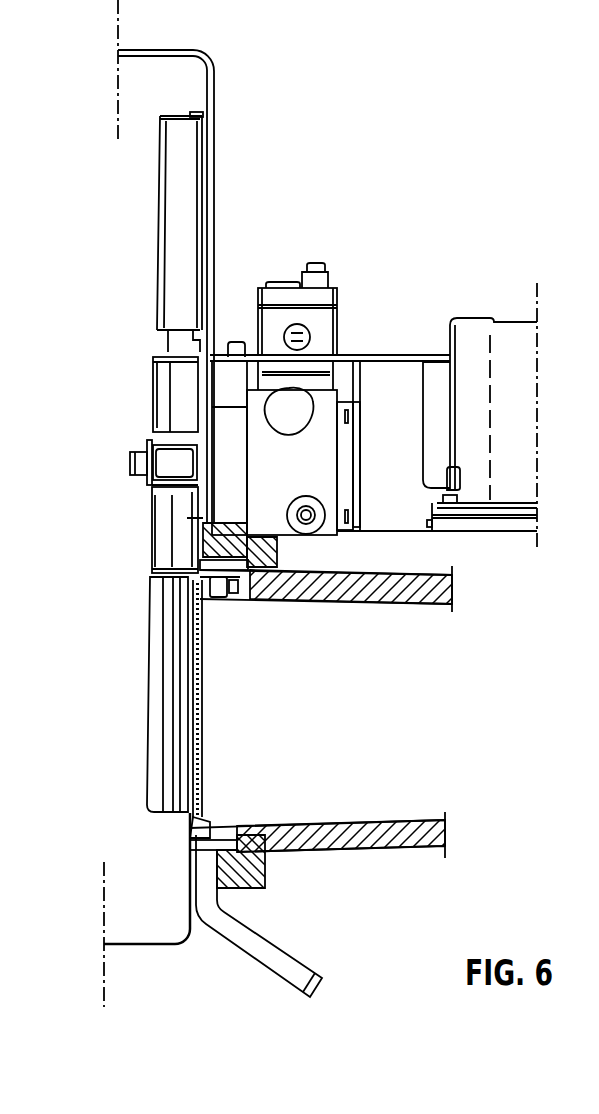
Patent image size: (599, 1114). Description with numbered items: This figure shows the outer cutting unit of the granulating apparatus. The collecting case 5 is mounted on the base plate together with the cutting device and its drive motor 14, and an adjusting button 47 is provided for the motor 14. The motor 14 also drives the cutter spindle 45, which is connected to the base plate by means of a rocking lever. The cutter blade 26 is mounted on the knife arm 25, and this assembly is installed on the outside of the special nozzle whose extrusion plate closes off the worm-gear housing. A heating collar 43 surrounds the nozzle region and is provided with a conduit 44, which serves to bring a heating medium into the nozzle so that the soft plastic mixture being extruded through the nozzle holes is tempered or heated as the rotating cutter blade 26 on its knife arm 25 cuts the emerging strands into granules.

The collecting case 5 is at (162, 52).
The drive motor 14 is at (470, 333).
The knife arm 25 is at (177, 347).
The cutter blade 26 is at (198, 113).
The heating collar 43 is at (190, 843).
The conduit 44 is at (277, 952).
The cutter spindle 45 is at (138, 463).
The adjusting button 47 is at (289, 412).